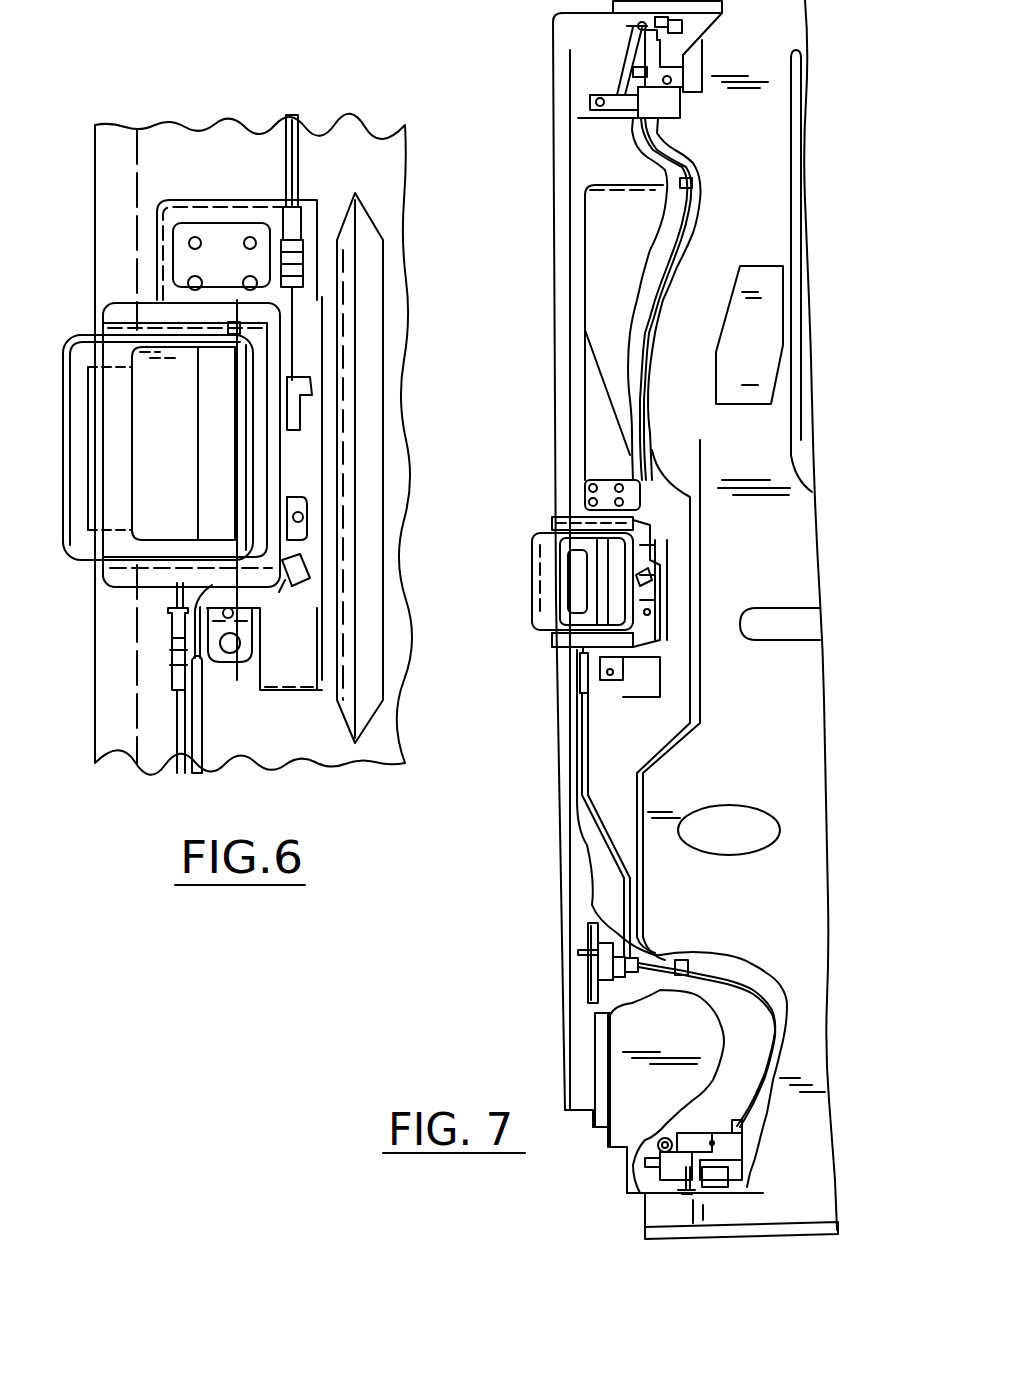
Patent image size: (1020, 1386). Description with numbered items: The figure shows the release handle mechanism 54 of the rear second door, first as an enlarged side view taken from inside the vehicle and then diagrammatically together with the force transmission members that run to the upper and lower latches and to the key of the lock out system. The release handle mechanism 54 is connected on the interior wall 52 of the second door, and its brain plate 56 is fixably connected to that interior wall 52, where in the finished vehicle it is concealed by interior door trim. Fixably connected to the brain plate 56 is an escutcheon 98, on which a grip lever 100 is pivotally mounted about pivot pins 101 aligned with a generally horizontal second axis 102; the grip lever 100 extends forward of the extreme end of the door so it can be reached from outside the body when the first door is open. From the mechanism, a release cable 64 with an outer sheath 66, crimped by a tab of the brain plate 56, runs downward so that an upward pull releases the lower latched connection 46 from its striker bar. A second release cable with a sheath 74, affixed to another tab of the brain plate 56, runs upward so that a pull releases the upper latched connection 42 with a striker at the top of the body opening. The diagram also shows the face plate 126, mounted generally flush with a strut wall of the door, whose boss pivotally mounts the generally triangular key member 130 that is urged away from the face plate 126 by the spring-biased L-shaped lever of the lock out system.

In FIG. 7, the latched connection 42 is at (677, 80).
In FIG. 7, the latched connection 46 is at (717, 1133).
In FIG. 7, the interior wall 52 is at (628, 720).
In FIG. 6, the release handle mechanism 54 is at (73, 318).
In FIG. 7, the release handle mechanism 54 is at (537, 507).
In FIG. 6, the brain plate 56 is at (258, 235).
In FIG. 7, the brain plate 56 is at (605, 478).
In FIG. 6, the release cable 64 is at (173, 600).
In FIG. 7, the outer sheath 66 is at (587, 768).
In FIG. 6, the sheath 74 is at (297, 140).
In FIG. 7, the sheath 74 is at (660, 273).
In FIG. 6, the escutcheon 98 is at (112, 573).
In FIG. 6, the grip lever 100 is at (60, 463).
In FIG. 7, the grip lever 100 is at (537, 583).
In FIG. 7, the pivot pins 101 is at (622, 527).
In FIG. 6, the second axis 102 is at (240, 675).
In FIG. 7, the face plate 126 is at (588, 992).
In FIG. 7, the key member 130 is at (580, 950).